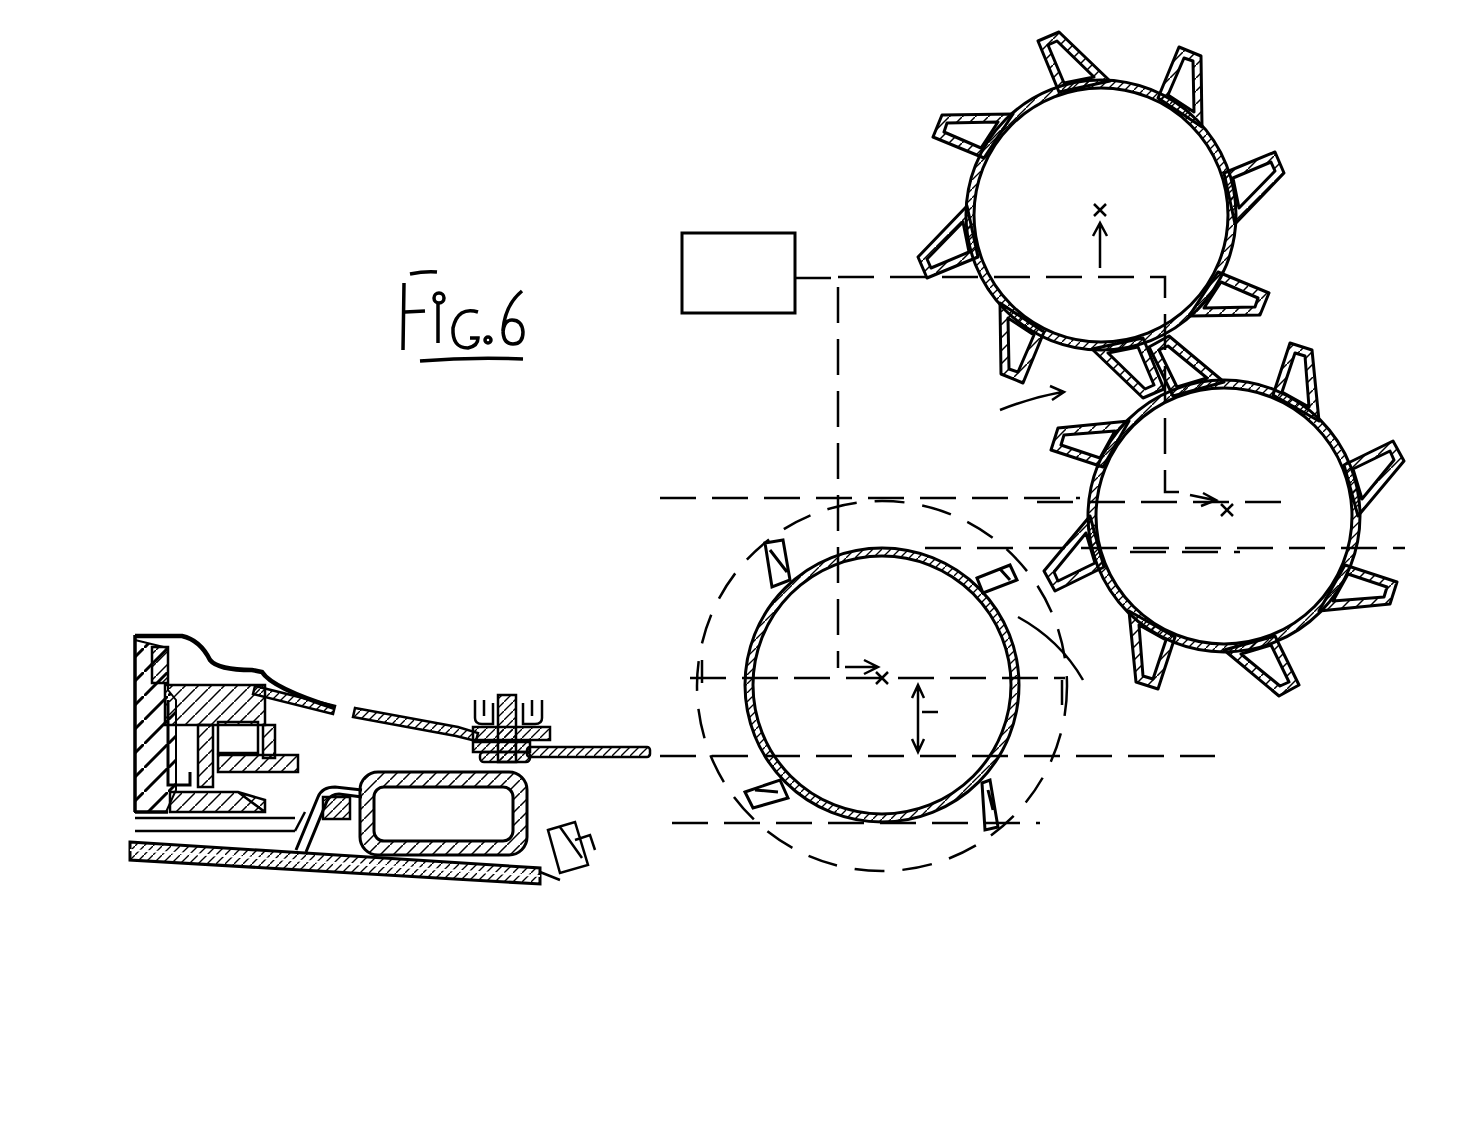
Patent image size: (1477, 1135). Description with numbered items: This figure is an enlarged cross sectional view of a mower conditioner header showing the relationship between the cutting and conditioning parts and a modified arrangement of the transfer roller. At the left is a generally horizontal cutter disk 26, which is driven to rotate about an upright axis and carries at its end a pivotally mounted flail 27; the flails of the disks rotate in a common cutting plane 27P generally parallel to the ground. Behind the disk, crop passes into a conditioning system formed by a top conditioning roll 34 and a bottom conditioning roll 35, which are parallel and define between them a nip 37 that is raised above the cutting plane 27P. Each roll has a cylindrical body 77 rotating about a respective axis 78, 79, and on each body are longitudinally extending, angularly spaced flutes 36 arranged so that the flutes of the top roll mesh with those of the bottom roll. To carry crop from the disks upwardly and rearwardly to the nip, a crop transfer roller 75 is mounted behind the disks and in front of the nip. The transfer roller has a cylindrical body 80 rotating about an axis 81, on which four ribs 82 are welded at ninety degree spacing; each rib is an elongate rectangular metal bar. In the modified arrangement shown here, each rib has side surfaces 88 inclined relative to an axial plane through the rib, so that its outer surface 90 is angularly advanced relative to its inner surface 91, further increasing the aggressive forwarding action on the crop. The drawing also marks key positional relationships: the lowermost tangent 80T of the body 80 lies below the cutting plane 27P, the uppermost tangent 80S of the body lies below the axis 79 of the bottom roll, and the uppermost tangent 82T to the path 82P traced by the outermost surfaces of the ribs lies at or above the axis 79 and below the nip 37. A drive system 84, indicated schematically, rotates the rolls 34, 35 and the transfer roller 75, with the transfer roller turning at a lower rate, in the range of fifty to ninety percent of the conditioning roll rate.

The horizontal disk 26 is at (412, 676).
The flail 27 is at (593, 742).
The common cutting plane 27P is at (1155, 760).
The top conditioning roll 34 is at (1158, 303).
The bottom conditioning roll 35 is at (1224, 481).
The flutes 36 is at (1388, 443).
The nip 37 is at (1001, 418).
The crop transfer roller 75 is at (700, 598).
The cylindrical body 77 is at (1220, 137).
The axis of top conditioning roll 78 is at (1130, 165).
The axis of bottom conditioning roll 79 is at (1250, 462).
The cylindrical body 80 is at (879, 547).
The uppermost tangent of cylindrical body 80S is at (1205, 565).
The lowermost tangent of cylindrical body 80T is at (688, 823).
The axis of transfer roller 81 is at (883, 672).
The rib 82 is at (1000, 797).
The path of travel of ribs 82P is at (712, 618).
The uppermost tangent to rib path 82T is at (667, 498).
The drive system 84 is at (762, 232).
The side surface 88 is at (997, 570).
The outer surface 90 is at (988, 832).
The inner surface 91 is at (975, 770).